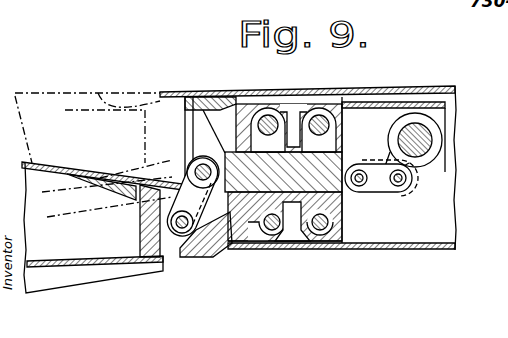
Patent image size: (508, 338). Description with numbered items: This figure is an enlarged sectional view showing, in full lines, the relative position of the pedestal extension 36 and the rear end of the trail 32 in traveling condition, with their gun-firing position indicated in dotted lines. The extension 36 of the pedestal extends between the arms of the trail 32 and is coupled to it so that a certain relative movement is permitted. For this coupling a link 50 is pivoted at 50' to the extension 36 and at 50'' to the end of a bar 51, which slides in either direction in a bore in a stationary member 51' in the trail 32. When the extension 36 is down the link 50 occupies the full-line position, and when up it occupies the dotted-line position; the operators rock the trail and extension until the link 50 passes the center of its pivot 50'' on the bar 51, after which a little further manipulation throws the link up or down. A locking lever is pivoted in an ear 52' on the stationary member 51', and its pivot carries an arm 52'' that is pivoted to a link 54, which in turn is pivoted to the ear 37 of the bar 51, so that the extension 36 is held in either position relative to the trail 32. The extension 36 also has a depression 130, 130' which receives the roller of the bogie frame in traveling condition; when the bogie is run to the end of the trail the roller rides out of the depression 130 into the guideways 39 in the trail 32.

The trail 32 is at (448, 219).
The pedestal extension 36 is at (30, 93).
The ear 37 is at (346, 153).
The guideways 39 is at (402, 92).
The link 50 is at (178, 194).
The pivot 50' is at (135, 221).
The pivot 50'' is at (215, 156).
The bar 51 is at (298, 184).
The stationary member 51' is at (304, 216).
The ear 52' is at (438, 136).
The arm 52'' is at (419, 170).
The link 54 is at (379, 191).
The depression 130 is at (106, 202).
The depression 130' is at (129, 88).